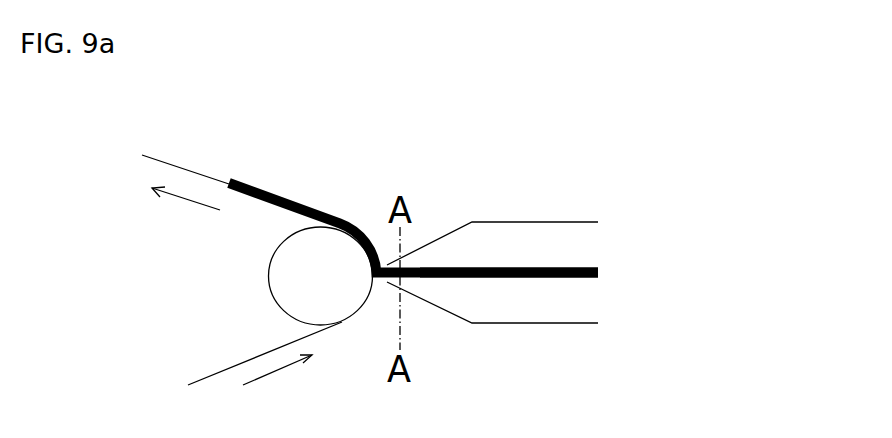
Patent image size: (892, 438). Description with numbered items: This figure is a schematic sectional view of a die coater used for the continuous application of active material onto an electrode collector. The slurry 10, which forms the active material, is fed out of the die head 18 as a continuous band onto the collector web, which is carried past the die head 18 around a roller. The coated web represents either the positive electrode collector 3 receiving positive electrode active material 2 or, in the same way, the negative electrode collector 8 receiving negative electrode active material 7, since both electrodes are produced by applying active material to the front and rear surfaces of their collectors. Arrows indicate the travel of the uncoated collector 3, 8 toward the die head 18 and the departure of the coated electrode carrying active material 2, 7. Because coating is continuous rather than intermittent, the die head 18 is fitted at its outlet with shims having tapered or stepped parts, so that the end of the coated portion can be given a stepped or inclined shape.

The positive electrode active material 2 is at (370, 189).
The negative electrode active material 7 is at (260, 189).
The positive electrode collector 3 is at (228, 340).
The negative electrode collector 8 is at (238, 362).
The slurry 10 is at (522, 278).
The die head 18 is at (528, 207).